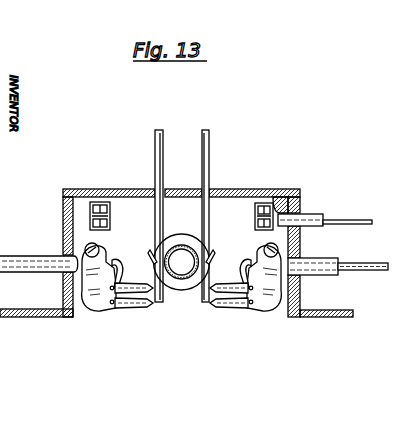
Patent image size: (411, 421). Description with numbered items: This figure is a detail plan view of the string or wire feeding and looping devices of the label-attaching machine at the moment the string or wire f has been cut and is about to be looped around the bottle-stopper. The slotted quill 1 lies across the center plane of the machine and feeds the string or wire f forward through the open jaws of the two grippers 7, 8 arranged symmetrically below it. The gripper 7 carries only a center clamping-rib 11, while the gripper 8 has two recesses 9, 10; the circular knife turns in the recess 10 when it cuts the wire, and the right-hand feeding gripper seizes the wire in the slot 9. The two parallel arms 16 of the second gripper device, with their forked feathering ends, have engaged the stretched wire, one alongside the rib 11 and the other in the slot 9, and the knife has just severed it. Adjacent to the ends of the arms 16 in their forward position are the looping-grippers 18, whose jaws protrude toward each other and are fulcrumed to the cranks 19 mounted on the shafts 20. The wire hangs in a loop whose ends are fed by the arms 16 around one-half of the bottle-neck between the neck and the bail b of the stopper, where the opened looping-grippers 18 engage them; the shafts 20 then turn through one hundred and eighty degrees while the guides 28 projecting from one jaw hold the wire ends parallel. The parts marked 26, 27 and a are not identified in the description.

The quill 1 is at (300, 216).
The gripper 7 is at (110, 216).
The gripper 8 is at (256, 231).
The recess 9 is at (256, 208).
The recess 10 is at (276, 196).
The center clamping-rib 11 is at (104, 207).
The parallel arms 16 is at (156, 160).
The looping-grippers 18 is at (125, 310).
The cranks 19 is at (182, 277).
The shafts 20 is at (28, 261).
The pin 26 is at (358, 265).
The hook 27 is at (114, 267).
The guides 28 is at (152, 284).
The bearing ring a is at (192, 285).
The bail b is at (177, 277).
The string or wire f is at (181, 250).